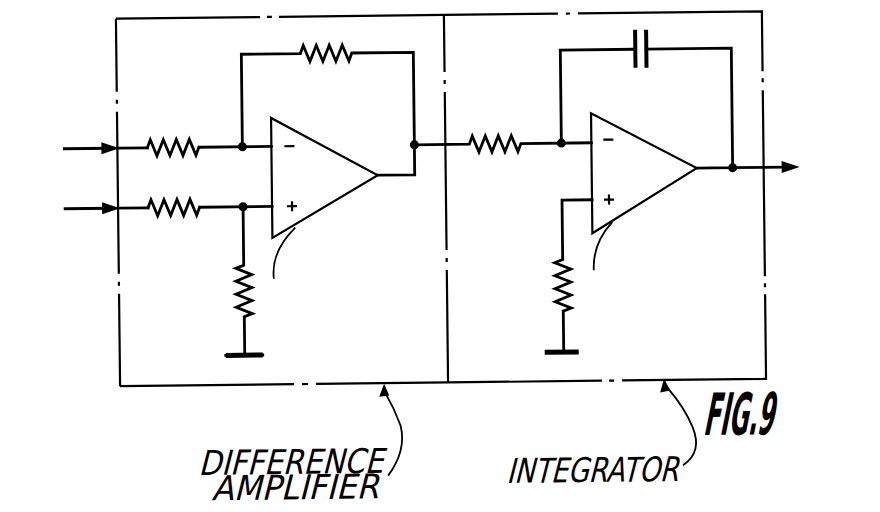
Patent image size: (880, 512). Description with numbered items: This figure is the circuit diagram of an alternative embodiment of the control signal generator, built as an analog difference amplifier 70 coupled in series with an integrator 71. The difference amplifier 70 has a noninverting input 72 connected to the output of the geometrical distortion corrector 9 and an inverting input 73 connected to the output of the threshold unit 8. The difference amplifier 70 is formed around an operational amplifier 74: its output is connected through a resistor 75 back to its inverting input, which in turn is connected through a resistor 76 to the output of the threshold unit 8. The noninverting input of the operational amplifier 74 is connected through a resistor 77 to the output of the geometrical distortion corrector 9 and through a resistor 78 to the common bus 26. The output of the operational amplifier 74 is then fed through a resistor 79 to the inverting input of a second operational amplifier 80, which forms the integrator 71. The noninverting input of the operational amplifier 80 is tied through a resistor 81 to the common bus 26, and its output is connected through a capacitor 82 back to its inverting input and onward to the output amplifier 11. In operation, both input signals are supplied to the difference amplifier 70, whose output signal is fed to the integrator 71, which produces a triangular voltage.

The difference amplifier 70 is at (266, 392).
The integrator 71 is at (557, 388).
The noninverting input 72 is at (116, 210).
The inverting input 73 is at (116, 142).
The operational amplifier 74 is at (345, 187).
The resistor 75 is at (312, 60).
The resistor 76 is at (160, 142).
The resistor 77 is at (170, 214).
The resistor 78 is at (220, 289).
The resistor 79 is at (498, 140).
The operational amplifier 80 is at (657, 186).
The resistor 81 is at (540, 292).
The capacitor 82 is at (650, 60).
The common bus 26 is at (212, 340).
The threshold unit 8 is at (67, 151).
The geometrical distortion corrector 9 is at (68, 211).
The output amplifier 11 is at (790, 170).